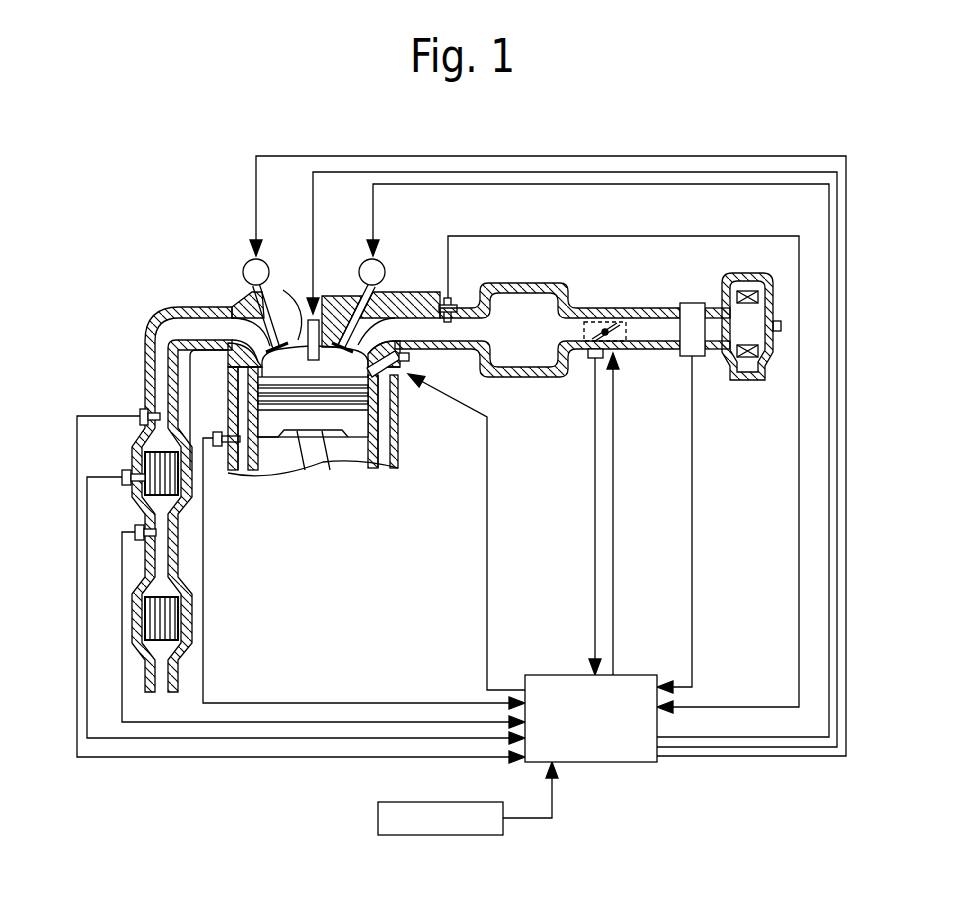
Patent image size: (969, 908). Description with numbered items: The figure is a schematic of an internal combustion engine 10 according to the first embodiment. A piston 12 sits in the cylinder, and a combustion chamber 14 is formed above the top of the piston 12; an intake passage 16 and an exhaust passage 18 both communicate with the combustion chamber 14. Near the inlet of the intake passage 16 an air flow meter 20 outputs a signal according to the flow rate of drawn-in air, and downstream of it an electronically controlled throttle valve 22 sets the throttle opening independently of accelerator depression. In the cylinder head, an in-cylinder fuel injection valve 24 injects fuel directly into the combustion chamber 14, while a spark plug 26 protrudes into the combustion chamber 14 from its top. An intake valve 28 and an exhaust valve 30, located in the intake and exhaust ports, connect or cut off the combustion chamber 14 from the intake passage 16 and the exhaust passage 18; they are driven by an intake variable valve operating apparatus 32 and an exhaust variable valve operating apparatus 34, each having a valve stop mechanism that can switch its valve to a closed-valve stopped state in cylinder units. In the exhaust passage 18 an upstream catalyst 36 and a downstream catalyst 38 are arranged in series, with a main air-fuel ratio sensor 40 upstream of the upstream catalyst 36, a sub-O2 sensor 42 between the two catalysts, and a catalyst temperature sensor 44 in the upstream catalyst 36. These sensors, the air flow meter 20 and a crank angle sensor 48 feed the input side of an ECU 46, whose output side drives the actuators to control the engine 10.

The internal combustion engine 10 is at (421, 460).
The piston 12 is at (350, 427).
The combustion chamber 14 is at (228, 372).
The intake passage 16 is at (578, 298).
The exhaust passage 18 is at (140, 340).
The air flow meter 20 is at (692, 303).
The throttle valve 22 is at (598, 325).
The in-cylinder fuel injection valve 24 is at (412, 375).
The spark plug 26 is at (300, 315).
The intake valve 28 is at (323, 318).
The exhaust valve 30 is at (272, 340).
The intake variable valve operating apparatus 32 is at (381, 263).
The exhaust variable valve operating apparatus 34 is at (247, 264).
The upstream catalyst 36 is at (155, 467).
The downstream catalyst 38 is at (150, 608).
The main air-fuel ratio sensor 40 is at (137, 417).
The sub-O2 sensor 42 is at (133, 537).
The catalyst temperature sensor 44 is at (130, 480).
The ECU 46 is at (632, 764).
The crank angle sensor 48 is at (378, 818).